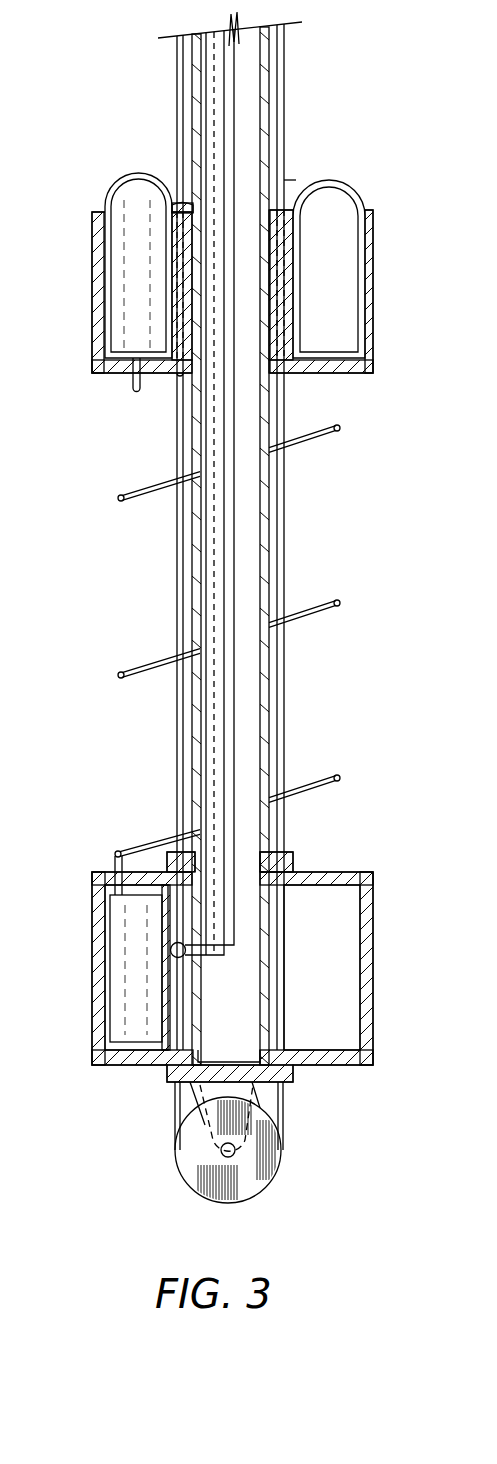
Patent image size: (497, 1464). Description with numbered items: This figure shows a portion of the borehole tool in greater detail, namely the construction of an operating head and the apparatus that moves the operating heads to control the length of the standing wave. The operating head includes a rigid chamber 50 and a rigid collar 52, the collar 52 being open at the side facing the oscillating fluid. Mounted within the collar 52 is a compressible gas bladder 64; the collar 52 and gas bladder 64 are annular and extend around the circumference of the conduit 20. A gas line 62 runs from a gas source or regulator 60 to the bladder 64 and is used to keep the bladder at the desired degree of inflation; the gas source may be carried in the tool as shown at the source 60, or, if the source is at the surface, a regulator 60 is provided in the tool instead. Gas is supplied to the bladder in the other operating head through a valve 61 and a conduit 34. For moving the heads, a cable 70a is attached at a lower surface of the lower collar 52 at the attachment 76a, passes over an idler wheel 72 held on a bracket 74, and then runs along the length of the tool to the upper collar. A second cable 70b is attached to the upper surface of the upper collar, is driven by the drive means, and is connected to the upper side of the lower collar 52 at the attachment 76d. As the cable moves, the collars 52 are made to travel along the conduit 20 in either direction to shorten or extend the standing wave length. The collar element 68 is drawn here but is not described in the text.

The conduit 20 is at (272, 64).
The conduit 34 is at (232, 44).
The rigid chamber 50 is at (340, 1066).
The rigid collar 52 is at (374, 318).
The gas source or regulator 60 is at (147, 1020).
The valve 61 is at (171, 946).
The gas line 62 is at (336, 612).
The compressible gas bladder 64 is at (122, 283).
The collar 68 is at (337, 866).
The cable 70a is at (284, 513).
The second cable 70b is at (176, 90).
The idler wheel 72 is at (262, 1170).
The bracket 74 is at (252, 1092).
The cable attachment 76a is at (172, 376).
The cable attachment 76d is at (185, 200).